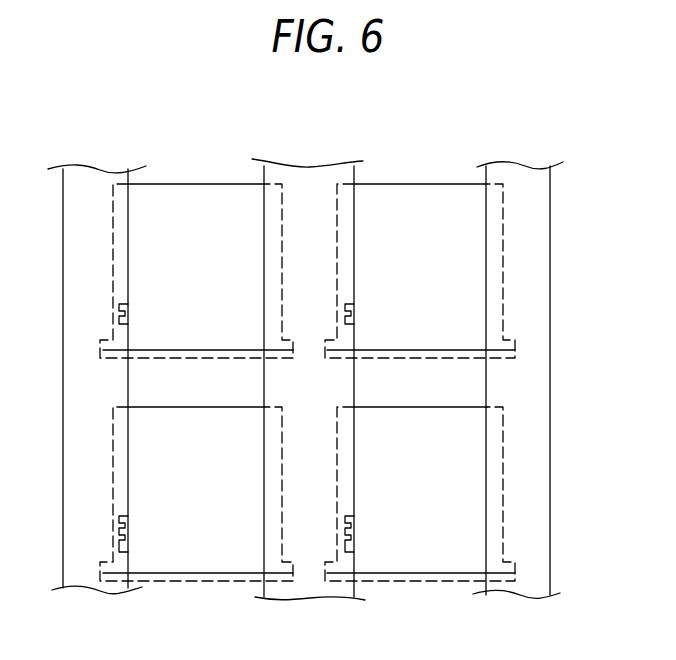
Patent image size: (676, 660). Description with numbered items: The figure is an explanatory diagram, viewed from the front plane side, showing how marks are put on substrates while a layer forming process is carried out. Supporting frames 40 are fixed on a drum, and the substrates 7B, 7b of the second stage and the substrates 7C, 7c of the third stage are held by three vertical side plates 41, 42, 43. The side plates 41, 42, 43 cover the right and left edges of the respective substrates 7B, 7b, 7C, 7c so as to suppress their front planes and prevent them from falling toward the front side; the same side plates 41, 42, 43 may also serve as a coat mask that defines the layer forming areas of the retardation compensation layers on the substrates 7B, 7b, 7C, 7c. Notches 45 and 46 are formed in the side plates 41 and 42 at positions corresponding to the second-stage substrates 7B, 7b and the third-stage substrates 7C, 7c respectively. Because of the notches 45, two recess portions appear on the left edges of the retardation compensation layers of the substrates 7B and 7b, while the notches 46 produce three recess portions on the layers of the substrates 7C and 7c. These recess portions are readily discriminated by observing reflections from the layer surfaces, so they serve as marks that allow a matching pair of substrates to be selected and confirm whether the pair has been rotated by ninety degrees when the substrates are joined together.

The supporting frame 40 is at (165, 358).
The side plate 41 is at (90, 173).
The side plate 42 is at (292, 167).
The side plate 43 is at (522, 162).
The notch 45 is at (122, 322).
The notch 46 is at (122, 529).
The substrate of the second stage 7B is at (198, 267).
The substrate of the second stage 7b is at (421, 267).
The substrate of the third stage 7C is at (198, 490).
The substrate of the third stage 7c is at (421, 490).